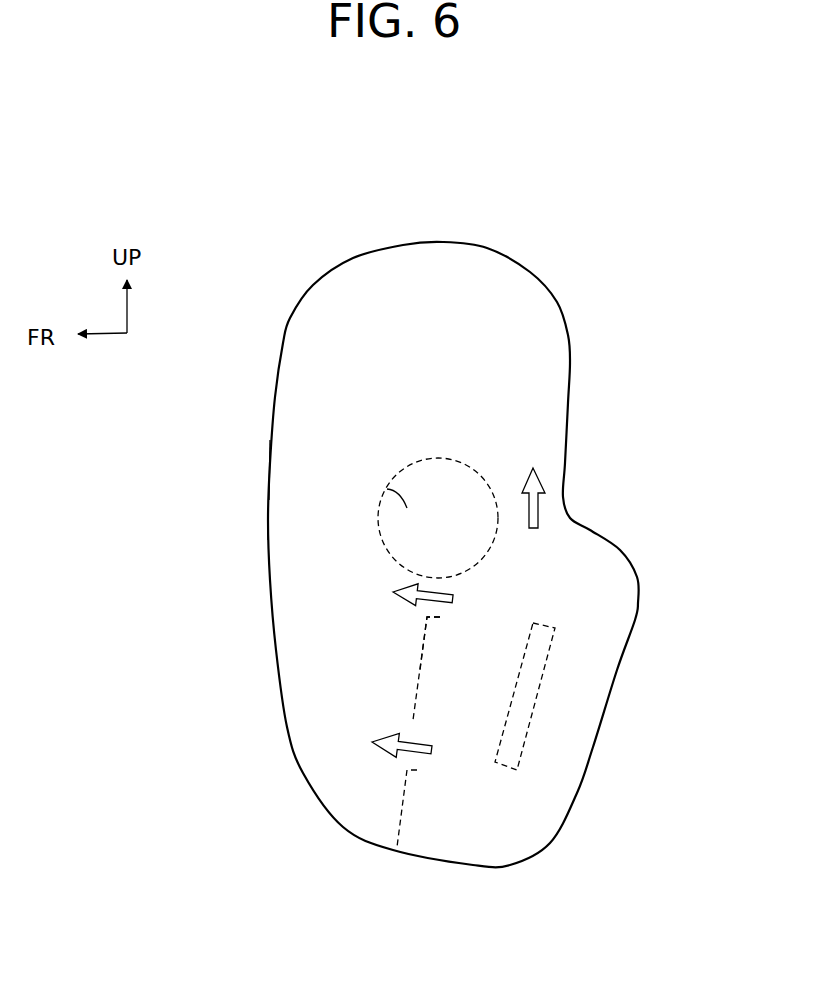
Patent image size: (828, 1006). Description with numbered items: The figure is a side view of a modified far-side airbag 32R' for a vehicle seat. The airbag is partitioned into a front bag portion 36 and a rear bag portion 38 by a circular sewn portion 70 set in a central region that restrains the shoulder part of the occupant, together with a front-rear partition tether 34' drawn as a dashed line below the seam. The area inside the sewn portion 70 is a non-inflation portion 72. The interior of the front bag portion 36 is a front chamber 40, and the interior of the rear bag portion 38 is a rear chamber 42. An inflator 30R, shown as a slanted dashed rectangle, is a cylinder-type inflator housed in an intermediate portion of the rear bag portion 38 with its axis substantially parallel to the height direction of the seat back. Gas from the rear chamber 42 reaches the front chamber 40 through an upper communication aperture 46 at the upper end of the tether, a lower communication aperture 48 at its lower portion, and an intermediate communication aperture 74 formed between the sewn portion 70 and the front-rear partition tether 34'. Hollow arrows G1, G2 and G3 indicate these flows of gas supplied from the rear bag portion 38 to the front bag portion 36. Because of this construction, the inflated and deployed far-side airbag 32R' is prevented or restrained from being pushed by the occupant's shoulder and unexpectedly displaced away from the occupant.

The far-side airbag 32R' is at (426, 554).
The front bag portion 36 is at (287, 478).
The front chamber 40 is at (288, 528).
The sewn portion 70 is at (420, 460).
The non-inflation portion 72 is at (387, 489).
The upper communication aperture 46 is at (508, 497).
The arrow G1 is at (542, 508).
The arrow G3 is at (415, 587).
The arrow G2 is at (393, 753).
The front-rear partition tether 34' is at (383, 668).
The intermediate communication aperture 74 is at (440, 617).
The lower communication aperture 48 is at (417, 770).
The inflator 30R is at (537, 700).
The rear chamber 42 is at (583, 668).
The rear bag portion 38 is at (618, 613).